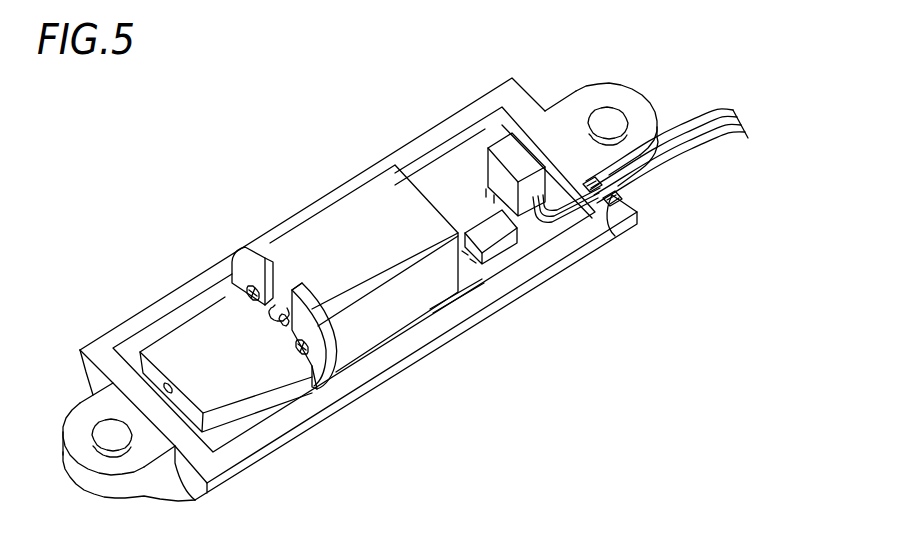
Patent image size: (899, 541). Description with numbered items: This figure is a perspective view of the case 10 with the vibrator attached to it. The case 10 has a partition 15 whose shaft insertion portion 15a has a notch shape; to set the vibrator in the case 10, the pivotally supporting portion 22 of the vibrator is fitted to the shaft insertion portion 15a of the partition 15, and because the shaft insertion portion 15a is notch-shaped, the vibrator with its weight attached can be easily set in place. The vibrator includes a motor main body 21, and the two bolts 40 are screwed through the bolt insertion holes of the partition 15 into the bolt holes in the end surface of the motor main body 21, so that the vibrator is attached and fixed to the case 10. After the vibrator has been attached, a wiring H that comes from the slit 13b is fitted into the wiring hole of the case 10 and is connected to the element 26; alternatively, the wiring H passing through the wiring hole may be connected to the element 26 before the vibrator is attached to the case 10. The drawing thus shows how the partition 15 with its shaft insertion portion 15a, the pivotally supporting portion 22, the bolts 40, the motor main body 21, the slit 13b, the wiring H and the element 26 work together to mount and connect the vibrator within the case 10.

The case 10 is at (470, 88).
The motor main body 21 is at (352, 224).
The element 26 is at (510, 150).
The pivotally supporting portion 22 is at (285, 337).
The bolt 40 is at (249, 288).
The partition 15 is at (330, 375).
The shaft insertion portion 15a is at (283, 288).
The slit 13b is at (597, 178).
The wiring H is at (697, 145).